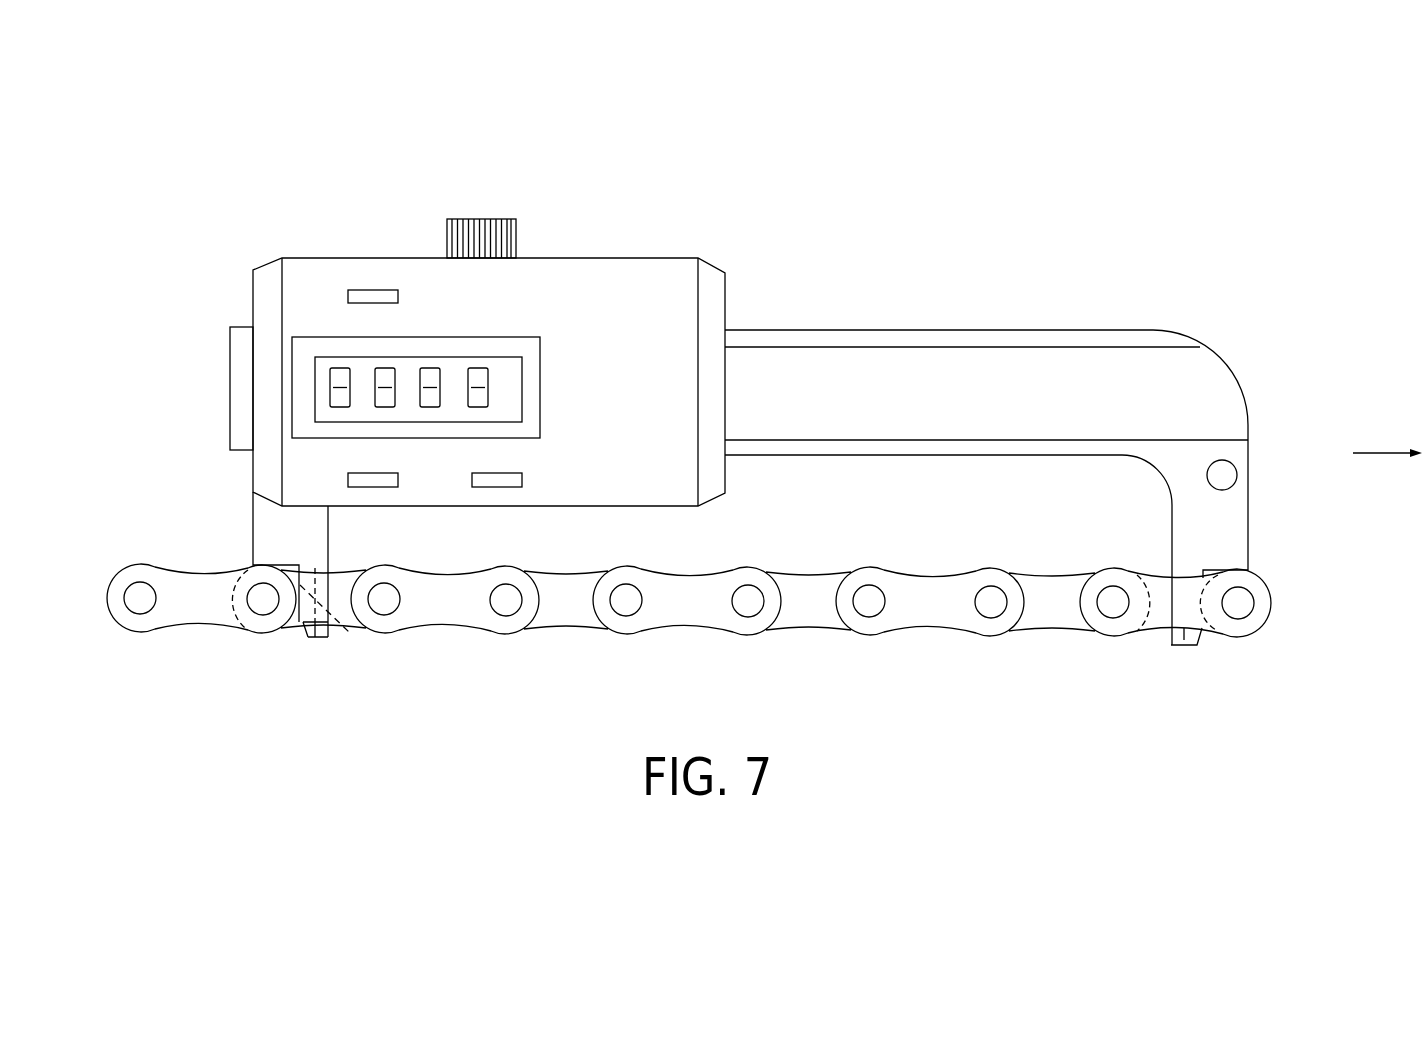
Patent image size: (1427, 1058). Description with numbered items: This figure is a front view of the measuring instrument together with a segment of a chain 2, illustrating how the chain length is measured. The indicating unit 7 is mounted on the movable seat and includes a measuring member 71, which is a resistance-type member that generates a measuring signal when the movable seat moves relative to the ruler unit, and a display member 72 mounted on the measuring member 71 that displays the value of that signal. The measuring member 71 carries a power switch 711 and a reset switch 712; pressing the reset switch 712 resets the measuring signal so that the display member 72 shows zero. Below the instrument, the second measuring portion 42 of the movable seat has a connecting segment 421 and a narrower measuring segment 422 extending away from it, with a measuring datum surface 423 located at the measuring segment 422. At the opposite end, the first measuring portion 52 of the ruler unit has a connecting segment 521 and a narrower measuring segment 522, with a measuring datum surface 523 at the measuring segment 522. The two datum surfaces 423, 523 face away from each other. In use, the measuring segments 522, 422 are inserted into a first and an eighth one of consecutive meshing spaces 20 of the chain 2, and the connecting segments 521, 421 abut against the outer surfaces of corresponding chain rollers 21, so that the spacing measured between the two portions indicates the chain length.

The indicating unit 7 is at (655, 240).
The measuring member 71 is at (546, 278).
The display member 72 is at (401, 362).
The power switch 711 is at (348, 480).
The reset switch 712 is at (522, 481).
The second measuring portion 42 is at (273, 547).
The connecting segment 421 is at (315, 543).
The measuring segment 422 is at (315, 643).
The measuring datum surface 423 is at (350, 633).
The first measuring portion 52 is at (1235, 460).
The connecting segment 521 is at (1222, 528).
The measuring segment 522 is at (1182, 605).
The measuring datum surface 523 is at (1223, 598).
The chain 2 is at (912, 612).
The meshing space 20 is at (303, 645).
The chain roller 21 is at (267, 642).